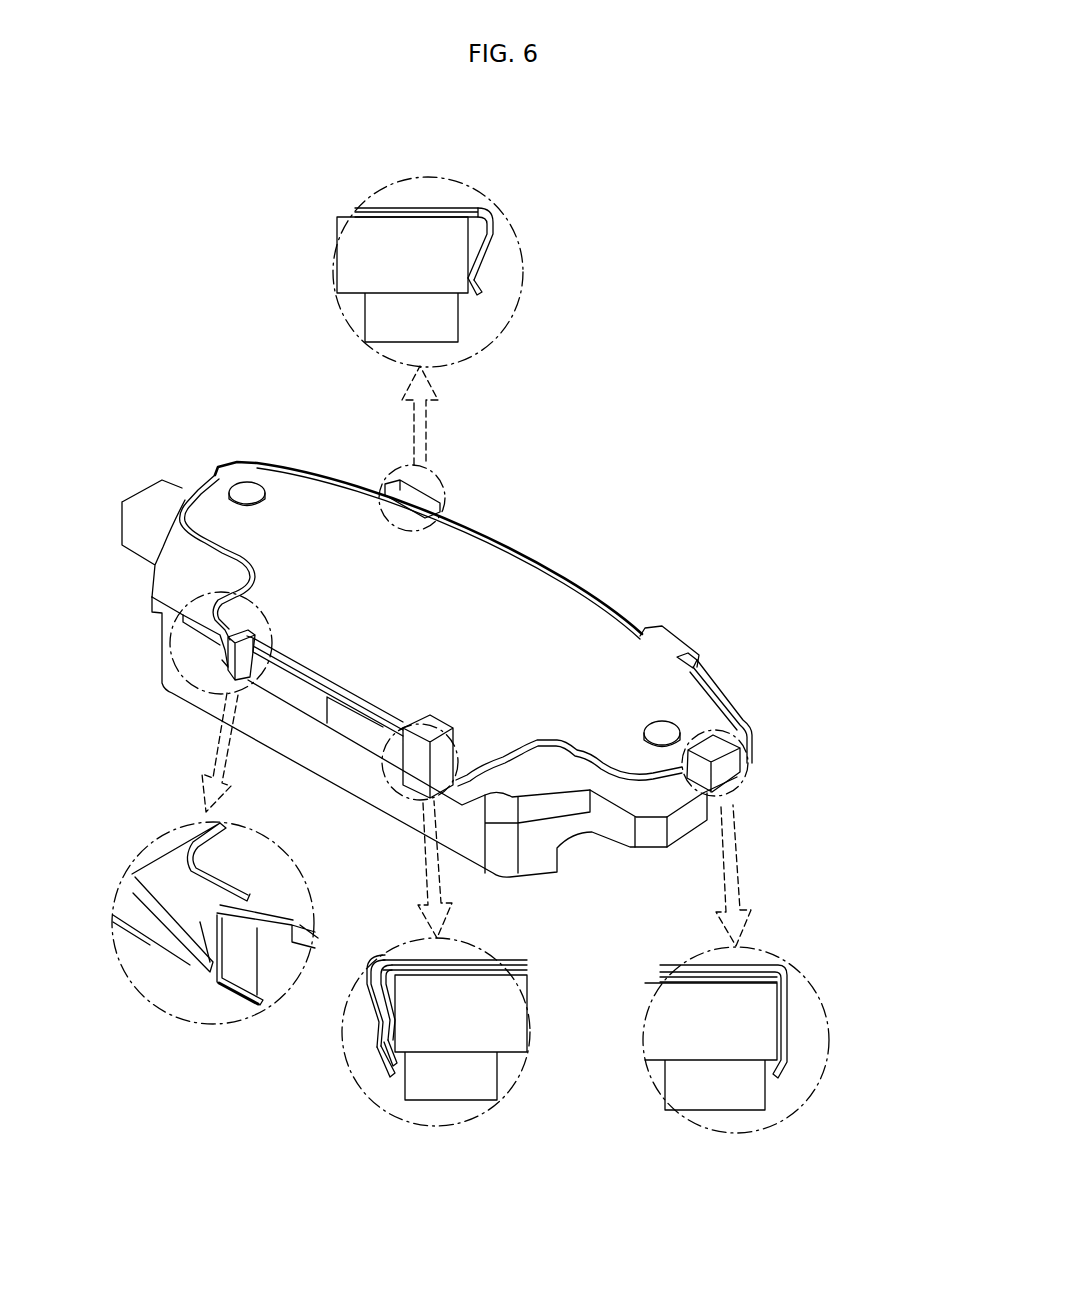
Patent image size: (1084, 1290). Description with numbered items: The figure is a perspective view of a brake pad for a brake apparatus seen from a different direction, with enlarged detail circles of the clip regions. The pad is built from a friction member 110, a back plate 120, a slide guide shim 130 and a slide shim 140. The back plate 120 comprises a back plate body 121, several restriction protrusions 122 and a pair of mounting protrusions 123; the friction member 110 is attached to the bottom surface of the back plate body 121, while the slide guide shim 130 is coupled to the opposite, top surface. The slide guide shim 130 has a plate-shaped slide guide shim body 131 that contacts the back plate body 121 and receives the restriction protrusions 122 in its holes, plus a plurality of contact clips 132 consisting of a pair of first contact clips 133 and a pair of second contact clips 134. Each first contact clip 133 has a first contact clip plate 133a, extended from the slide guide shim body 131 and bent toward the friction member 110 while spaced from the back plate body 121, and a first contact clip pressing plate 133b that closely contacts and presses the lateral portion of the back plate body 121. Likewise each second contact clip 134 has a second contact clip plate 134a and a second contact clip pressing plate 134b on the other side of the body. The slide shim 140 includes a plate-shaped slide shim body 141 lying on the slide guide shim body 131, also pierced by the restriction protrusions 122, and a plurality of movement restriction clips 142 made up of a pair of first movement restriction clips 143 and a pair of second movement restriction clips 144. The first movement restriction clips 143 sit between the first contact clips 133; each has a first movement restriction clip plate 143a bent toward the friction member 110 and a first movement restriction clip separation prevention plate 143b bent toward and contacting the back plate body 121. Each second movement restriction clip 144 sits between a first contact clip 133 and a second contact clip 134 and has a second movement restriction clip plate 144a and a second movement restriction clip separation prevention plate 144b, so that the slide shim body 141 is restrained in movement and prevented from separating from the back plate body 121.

The friction member 110 is at (368, 320).
The back plate 120 is at (387, 634).
The back plate body 121 is at (175, 580).
The restriction protrusions 122 is at (451, 575).
The mounting protrusions 123 is at (145, 492).
The slide guide shim 130 is at (421, 623).
The slide guide shim body 131 is at (402, 210).
The contact clips 132 is at (396, 663).
The first contact clip 133 is at (231, 866).
The first contact clip plate 133a is at (163, 902).
The first contact clip pressing plate 133b is at (190, 952).
The second contact clip 134 is at (556, 363).
The second contact clip plate 134a is at (492, 233).
The second contact clip pressing plate 134b is at (478, 283).
The slide shim 140 is at (476, 770).
The slide shim body 141 is at (590, 630).
The movement restriction clips 142 is at (502, 916).
The first movement restriction clip 143 is at (311, 916).
The first movement restriction clip plate 143a is at (393, 1030).
The first movement restriction clip separation prevention plate 143b is at (383, 1040).
The second movement restriction clip 144 is at (808, 950).
The second movement restriction clip plate 144a is at (787, 1020).
The second movement restriction clip separation prevention plate 144b is at (783, 1073).